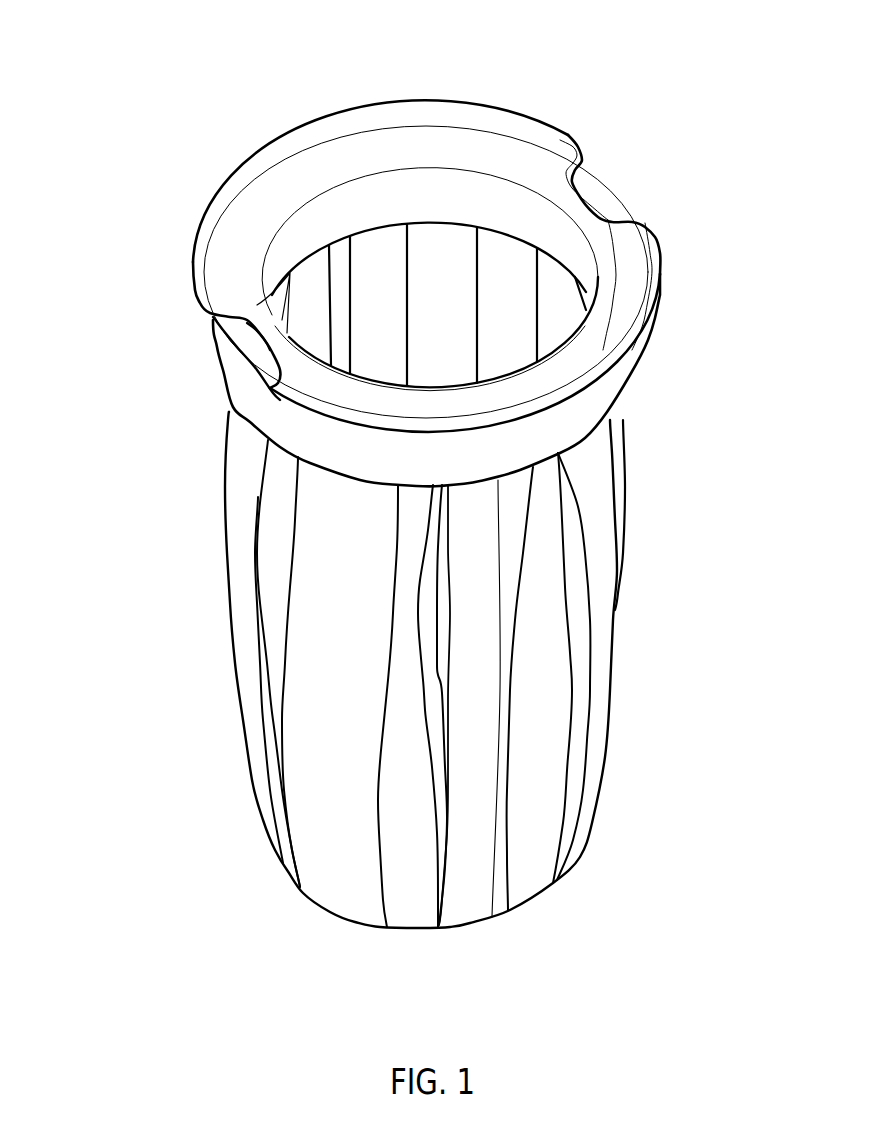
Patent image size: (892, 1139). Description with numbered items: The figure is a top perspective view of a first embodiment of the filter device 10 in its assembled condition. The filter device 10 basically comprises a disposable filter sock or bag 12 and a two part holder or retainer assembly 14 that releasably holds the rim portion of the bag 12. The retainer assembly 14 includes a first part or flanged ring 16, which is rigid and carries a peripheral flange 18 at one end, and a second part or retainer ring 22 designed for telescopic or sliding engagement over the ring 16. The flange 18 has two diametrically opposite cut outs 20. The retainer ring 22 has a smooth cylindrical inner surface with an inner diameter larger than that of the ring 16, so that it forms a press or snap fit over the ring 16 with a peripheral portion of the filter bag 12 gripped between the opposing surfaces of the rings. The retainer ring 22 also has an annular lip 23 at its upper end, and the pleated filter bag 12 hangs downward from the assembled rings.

The filter device 10 is at (697, 432).
The filter sock or bag 12 is at (618, 665).
The holder or retainer assembly 14 is at (532, 136).
The flanged ring 16 is at (372, 192).
The peripheral flange 18 is at (624, 308).
The cut outs 20 is at (580, 198).
The retainer ring 22 is at (300, 432).
The annular lip 23 is at (217, 333).